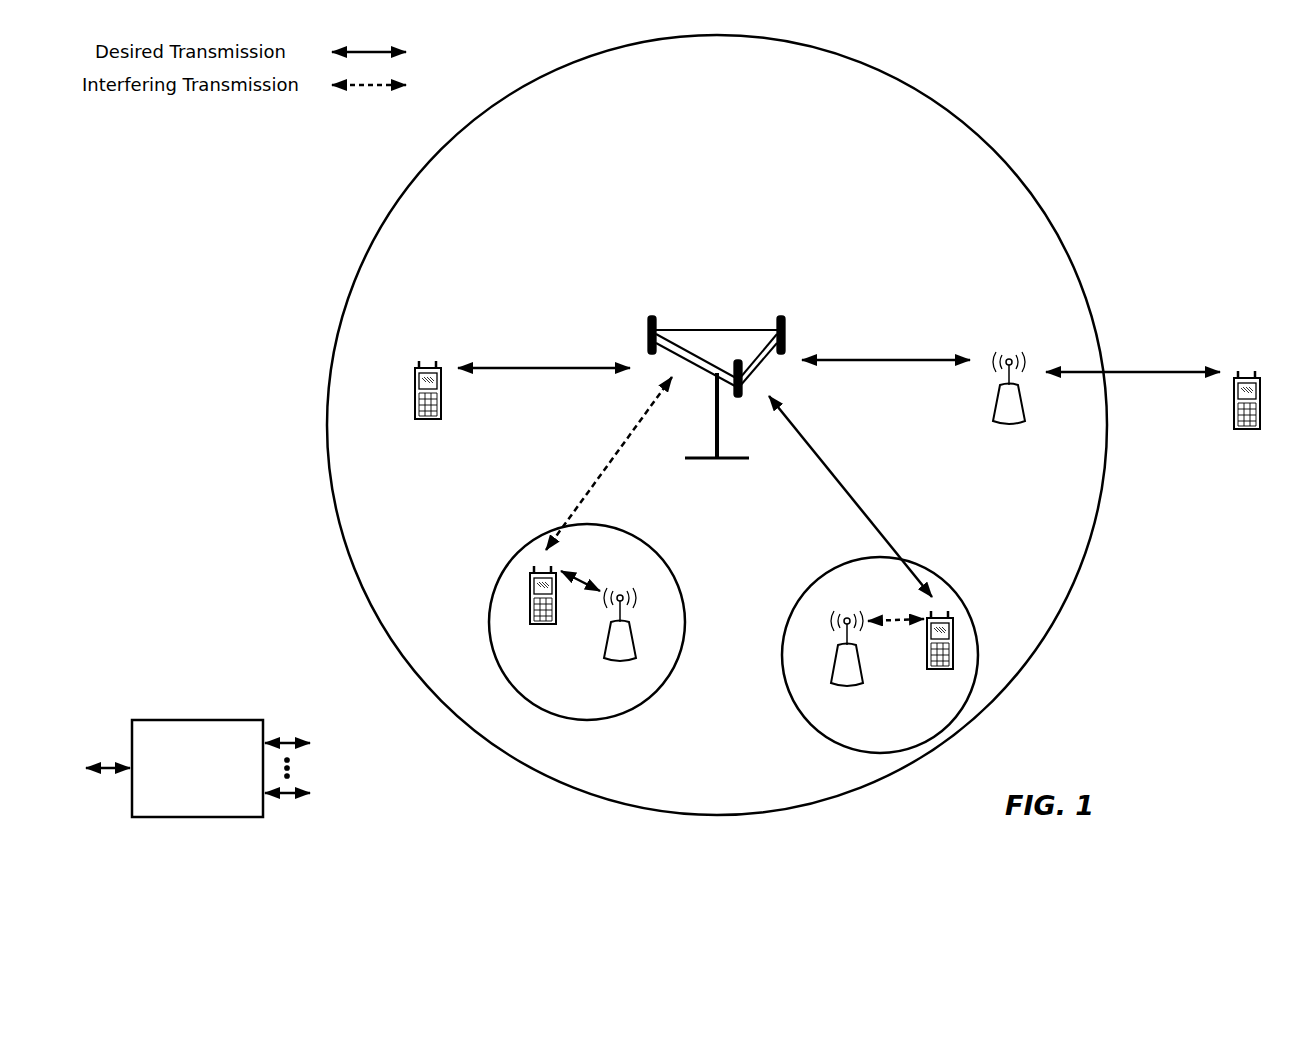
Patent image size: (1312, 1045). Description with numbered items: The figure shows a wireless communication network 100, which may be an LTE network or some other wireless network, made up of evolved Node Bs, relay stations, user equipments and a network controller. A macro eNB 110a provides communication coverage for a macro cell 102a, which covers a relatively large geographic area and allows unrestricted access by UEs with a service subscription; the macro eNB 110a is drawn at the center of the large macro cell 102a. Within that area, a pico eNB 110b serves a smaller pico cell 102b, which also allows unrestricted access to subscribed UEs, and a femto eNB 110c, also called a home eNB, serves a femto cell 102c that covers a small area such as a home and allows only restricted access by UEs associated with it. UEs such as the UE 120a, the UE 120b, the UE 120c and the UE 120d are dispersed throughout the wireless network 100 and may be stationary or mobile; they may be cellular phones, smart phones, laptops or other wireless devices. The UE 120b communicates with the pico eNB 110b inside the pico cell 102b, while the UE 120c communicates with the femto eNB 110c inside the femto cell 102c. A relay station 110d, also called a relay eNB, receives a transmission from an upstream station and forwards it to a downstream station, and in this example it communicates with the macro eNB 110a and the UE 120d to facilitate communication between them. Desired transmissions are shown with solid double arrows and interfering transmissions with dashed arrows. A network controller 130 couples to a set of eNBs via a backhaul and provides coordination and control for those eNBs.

The wireless communication network 100 is at (1172, 97).
The macro cell 102a is at (988, 120).
The pico cell 102b is at (660, 557).
The femto cell 102c is at (806, 588).
The macro eNB 110a is at (707, 330).
The pico eNB 110b is at (638, 650).
The femto eNB 110c is at (830, 668).
The relay station 110d is at (1010, 358).
The UE 120a is at (415, 375).
The UE 120b is at (530, 616).
The UE 120c is at (927, 664).
The UE 120d is at (1261, 384).
The network controller 130 is at (190, 719).